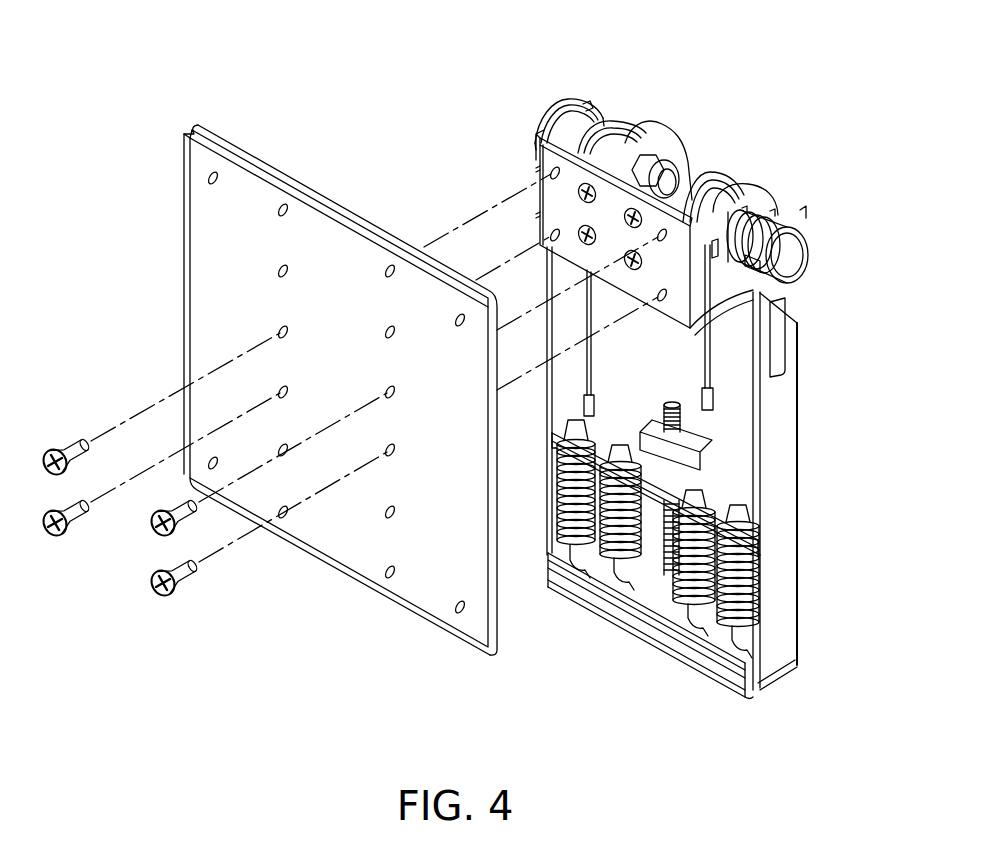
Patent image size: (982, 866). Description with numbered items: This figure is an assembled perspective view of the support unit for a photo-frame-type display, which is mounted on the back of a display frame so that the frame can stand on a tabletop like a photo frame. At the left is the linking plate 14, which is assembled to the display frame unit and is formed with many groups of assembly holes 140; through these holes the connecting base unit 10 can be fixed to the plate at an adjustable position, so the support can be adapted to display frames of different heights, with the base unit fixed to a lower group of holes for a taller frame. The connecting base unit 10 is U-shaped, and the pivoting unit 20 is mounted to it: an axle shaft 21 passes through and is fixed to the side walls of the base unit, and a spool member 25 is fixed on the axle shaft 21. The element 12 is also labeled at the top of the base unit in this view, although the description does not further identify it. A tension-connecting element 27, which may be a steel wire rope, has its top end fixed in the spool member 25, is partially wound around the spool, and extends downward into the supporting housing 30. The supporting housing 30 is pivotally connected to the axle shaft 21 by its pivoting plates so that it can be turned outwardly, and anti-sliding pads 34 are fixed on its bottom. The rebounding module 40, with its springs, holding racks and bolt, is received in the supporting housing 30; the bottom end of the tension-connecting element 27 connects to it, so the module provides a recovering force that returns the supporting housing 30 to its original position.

The connecting base unit 10 is at (530, 190).
The shaft 12 is at (668, 150).
The linking plate 14 is at (283, 170).
The assembly holes 140 is at (386, 334).
The pivoting unit 20 is at (558, 100).
The axle shaft 21 is at (792, 258).
The spool member 25 is at (608, 132).
The tension-connecting element 27 is at (588, 312).
The supporting housing 30 is at (780, 454).
The anti-sliding pads 34 is at (683, 650).
The rebounding module 40 is at (655, 577).